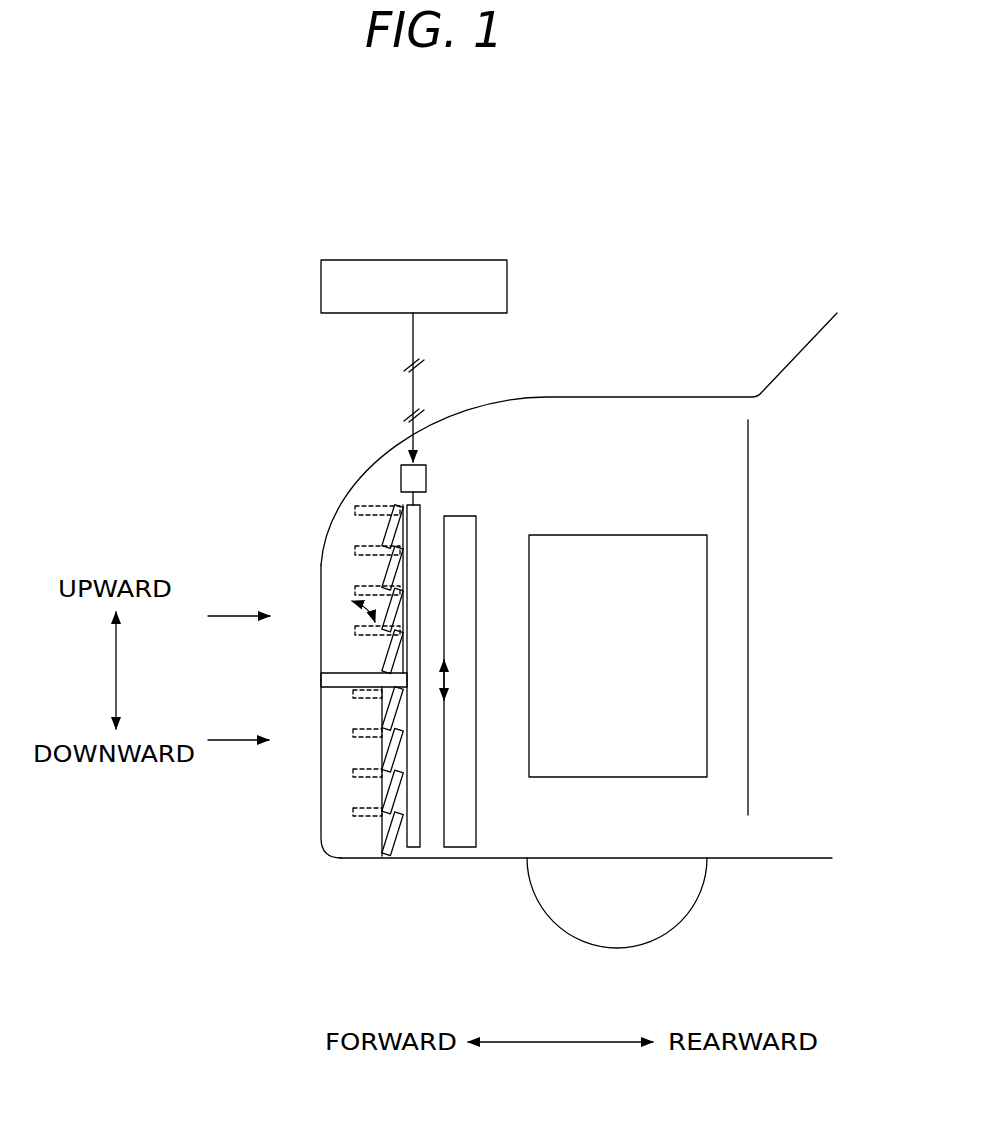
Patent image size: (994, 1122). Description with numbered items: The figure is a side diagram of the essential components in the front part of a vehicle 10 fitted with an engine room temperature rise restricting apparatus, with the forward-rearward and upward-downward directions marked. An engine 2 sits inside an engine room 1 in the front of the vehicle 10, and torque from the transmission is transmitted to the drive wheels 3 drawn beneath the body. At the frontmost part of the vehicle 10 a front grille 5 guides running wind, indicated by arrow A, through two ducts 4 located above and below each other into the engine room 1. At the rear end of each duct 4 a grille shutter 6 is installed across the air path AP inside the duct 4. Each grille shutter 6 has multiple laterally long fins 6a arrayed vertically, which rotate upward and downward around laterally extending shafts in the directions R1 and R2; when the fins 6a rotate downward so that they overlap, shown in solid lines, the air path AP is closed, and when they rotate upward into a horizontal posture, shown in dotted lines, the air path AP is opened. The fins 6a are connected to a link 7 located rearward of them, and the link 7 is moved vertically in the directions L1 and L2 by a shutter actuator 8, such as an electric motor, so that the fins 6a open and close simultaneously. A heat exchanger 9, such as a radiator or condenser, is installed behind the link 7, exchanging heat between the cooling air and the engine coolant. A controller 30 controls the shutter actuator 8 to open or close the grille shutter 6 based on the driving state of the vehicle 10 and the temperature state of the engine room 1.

The engine room 1 is at (622, 415).
The engine 2 is at (677, 535).
The drive wheels 3 is at (670, 925).
The ducts 4 is at (326, 544).
The front grille 5 is at (319, 650).
The grille shutter 6 is at (377, 494).
The fins 6a is at (380, 768).
The link 7 is at (421, 521).
The shutter actuator 8 is at (427, 478).
The heat exchanger 9 is at (470, 516).
The vehicle 10 is at (761, 295).
The controller 30 is at (507, 291).
The running wind A is at (239, 660).
The air path AP is at (382, 749).
The fin rotation direction R1 is at (348, 597).
The fin rotation direction R2 is at (364, 646).
The link movement direction L1 is at (442, 664).
The link movement direction L2 is at (442, 721).